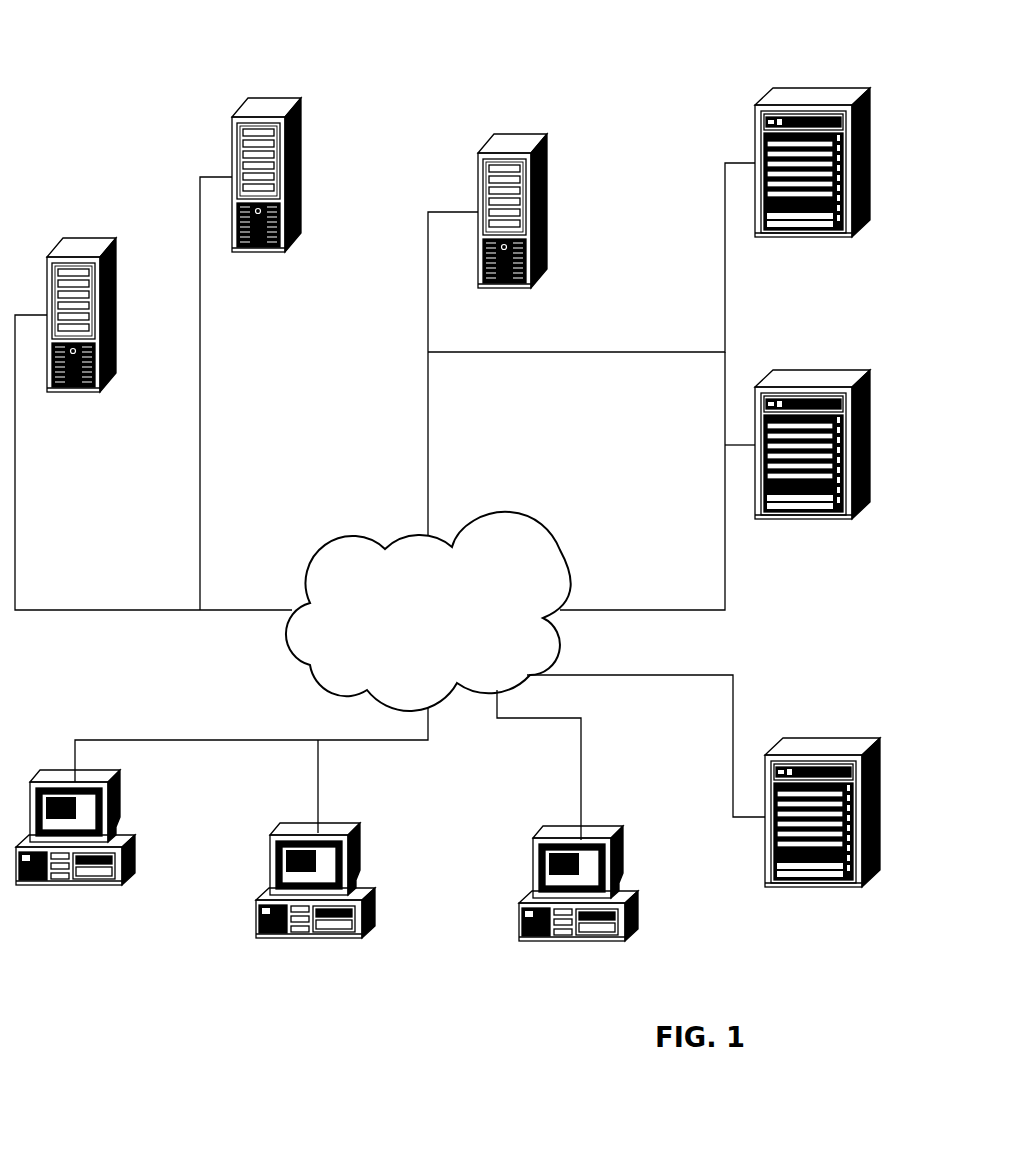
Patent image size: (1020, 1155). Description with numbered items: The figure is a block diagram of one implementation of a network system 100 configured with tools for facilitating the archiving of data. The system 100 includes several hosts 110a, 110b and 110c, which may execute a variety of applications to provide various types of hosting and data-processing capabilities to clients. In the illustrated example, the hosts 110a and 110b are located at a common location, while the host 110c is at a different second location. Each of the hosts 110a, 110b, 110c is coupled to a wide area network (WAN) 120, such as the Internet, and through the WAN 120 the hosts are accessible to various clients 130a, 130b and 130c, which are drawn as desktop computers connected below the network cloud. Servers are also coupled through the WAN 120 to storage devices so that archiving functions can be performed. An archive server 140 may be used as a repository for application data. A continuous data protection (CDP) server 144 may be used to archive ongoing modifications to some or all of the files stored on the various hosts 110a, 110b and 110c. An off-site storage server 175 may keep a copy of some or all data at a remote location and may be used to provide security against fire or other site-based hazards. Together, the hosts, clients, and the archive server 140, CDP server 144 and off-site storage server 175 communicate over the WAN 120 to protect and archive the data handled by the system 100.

The network system 100 is at (158, 52).
The host 110a is at (108, 315).
The host 110b is at (293, 177).
The host 110c is at (540, 210).
The wide area network (WAN) 120 is at (459, 666).
The client 130a is at (133, 860).
The client 130b is at (372, 913).
The client 130c is at (640, 918).
The archive server 140 is at (817, 378).
The continuous data protection (CDP) server 144 is at (817, 97).
The off-site storage server 175 is at (827, 750).